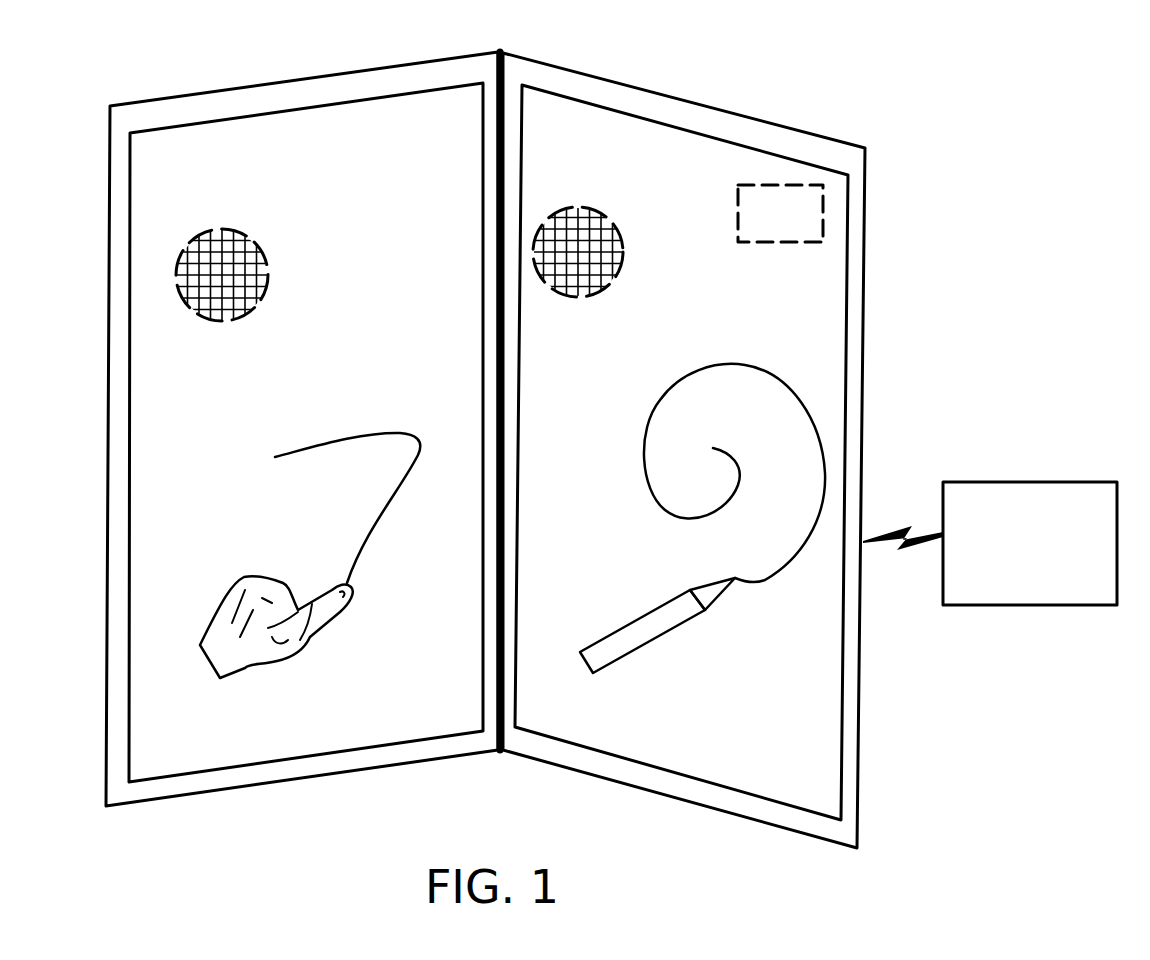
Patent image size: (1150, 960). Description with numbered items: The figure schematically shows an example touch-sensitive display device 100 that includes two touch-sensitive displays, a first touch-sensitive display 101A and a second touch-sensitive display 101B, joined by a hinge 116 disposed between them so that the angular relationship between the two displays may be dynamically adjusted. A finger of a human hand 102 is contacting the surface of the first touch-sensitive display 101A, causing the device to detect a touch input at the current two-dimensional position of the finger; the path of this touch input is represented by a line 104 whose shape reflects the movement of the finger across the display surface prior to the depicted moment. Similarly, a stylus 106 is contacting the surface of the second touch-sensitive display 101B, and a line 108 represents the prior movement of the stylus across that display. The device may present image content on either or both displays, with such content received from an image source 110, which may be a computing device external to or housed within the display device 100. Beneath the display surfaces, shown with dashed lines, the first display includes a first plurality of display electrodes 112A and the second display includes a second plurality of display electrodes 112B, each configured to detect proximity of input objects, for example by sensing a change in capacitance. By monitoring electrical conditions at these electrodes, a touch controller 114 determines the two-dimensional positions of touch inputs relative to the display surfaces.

The touch-sensitive display device 100 is at (482, 430).
The first touch-sensitive display 101A is at (130, 282).
The second touch-sensitive display 101B is at (848, 287).
The human hand 102 is at (277, 661).
The line 104 is at (340, 447).
The stylus 106 is at (593, 675).
The line 108 is at (735, 350).
The image source 110 is at (990, 543).
The first plurality of display electrodes 112A is at (253, 248).
The second plurality of display electrodes 112B is at (612, 222).
The touch controller 114 is at (780, 213).
The hinge 116 is at (500, 50).